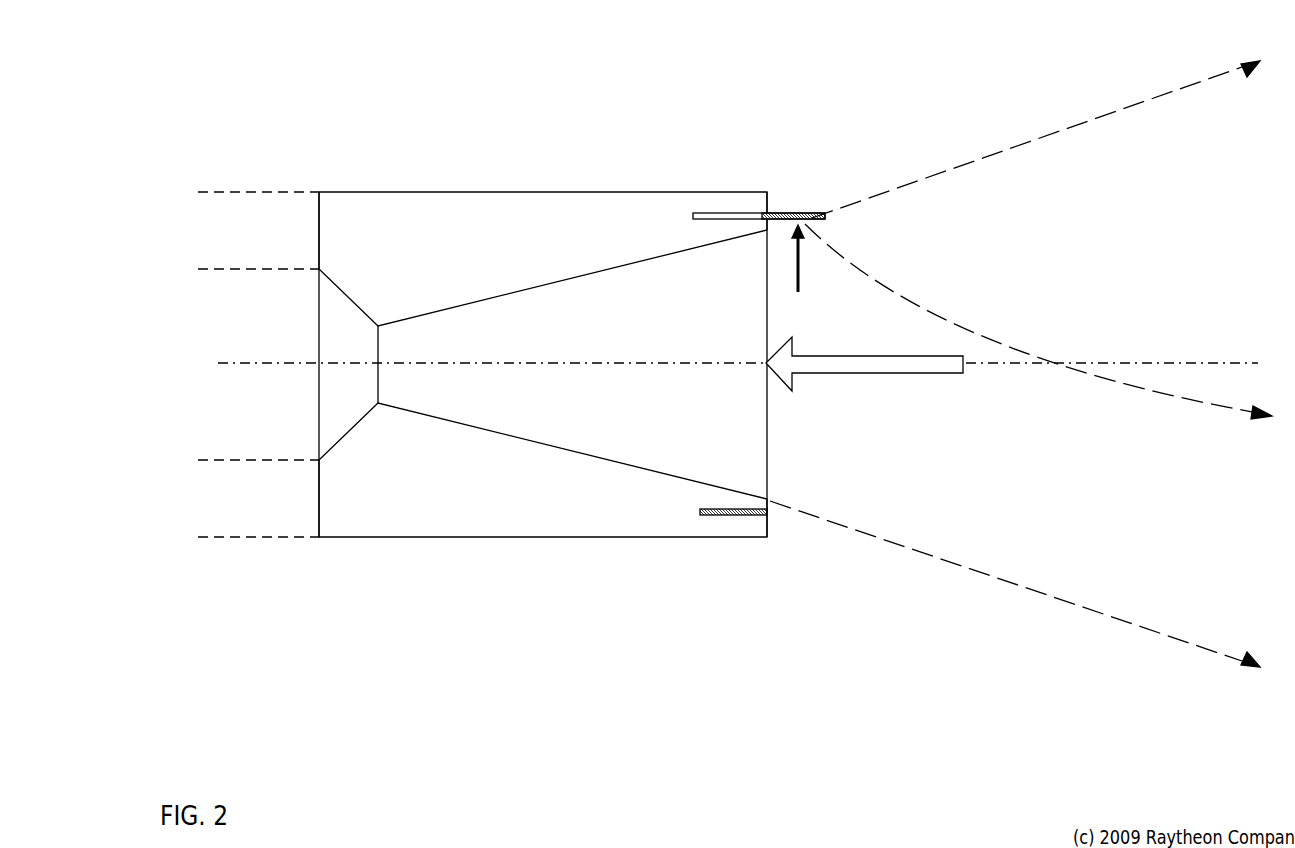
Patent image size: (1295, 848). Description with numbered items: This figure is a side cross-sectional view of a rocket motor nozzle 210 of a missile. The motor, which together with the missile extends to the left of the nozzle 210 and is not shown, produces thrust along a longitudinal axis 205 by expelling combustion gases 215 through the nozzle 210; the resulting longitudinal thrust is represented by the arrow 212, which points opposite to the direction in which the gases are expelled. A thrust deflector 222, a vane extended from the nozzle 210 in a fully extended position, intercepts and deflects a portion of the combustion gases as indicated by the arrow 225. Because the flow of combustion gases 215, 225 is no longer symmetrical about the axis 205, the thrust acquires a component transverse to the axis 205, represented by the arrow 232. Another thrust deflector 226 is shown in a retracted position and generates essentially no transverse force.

The longitudinal axis 205 is at (540, 362).
The nozzle 210 is at (745, 493).
The arrow representing thrust 212 is at (890, 373).
The combustion gases 215 is at (1052, 133).
The thrust deflector 222 is at (826, 217).
The arrow indicating deflected combustion gases 225 is at (1114, 383).
The thrust deflector 226 is at (768, 516).
The arrow representing transverse thrust component 232 is at (803, 267).